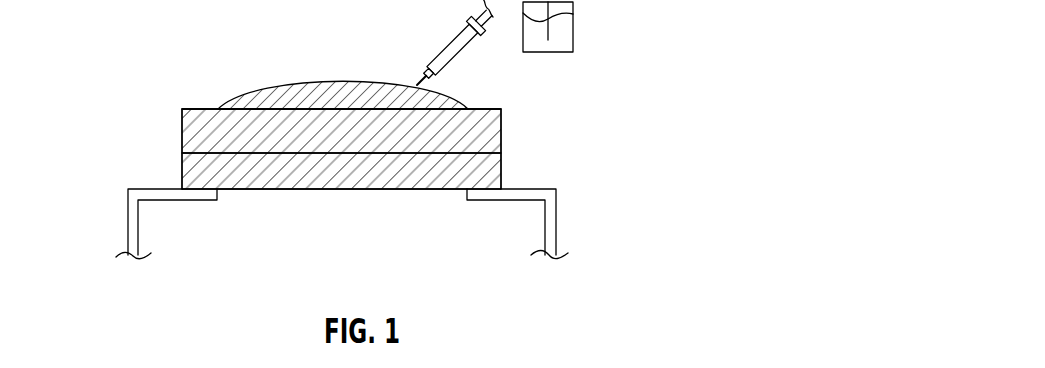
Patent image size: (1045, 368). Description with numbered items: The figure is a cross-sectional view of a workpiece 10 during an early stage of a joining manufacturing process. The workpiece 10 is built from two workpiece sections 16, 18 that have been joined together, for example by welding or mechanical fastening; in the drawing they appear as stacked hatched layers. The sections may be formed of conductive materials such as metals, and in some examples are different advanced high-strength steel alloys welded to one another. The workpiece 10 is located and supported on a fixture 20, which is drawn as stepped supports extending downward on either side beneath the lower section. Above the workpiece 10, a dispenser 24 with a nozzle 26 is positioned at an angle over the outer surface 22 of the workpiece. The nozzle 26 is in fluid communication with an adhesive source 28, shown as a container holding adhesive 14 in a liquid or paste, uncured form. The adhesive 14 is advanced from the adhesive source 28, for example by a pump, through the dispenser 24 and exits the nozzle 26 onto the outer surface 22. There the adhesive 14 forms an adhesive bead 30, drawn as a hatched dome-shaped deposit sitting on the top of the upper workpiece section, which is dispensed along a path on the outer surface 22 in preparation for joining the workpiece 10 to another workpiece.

The workpiece 10 is at (195, 138).
The adhesive 14 is at (424, 66).
The workpiece section 16 is at (487, 128).
The workpiece section 18 is at (252, 182).
The fixture 20 is at (125, 232).
The outer surface 22 is at (503, 113).
The dispenser 24 is at (463, 15).
The nozzle 26 is at (460, 38).
The adhesive source 28 is at (563, 53).
The adhesive bead 30 is at (291, 100).